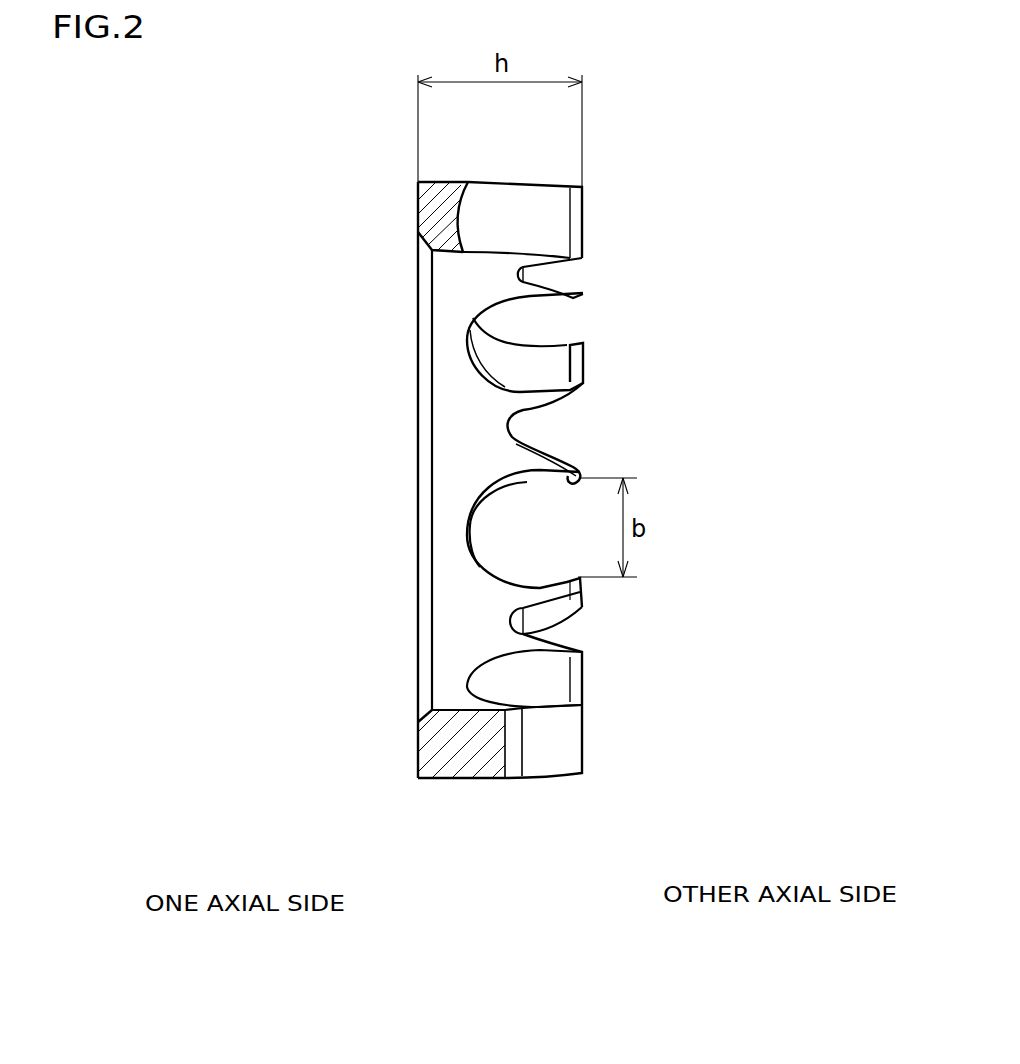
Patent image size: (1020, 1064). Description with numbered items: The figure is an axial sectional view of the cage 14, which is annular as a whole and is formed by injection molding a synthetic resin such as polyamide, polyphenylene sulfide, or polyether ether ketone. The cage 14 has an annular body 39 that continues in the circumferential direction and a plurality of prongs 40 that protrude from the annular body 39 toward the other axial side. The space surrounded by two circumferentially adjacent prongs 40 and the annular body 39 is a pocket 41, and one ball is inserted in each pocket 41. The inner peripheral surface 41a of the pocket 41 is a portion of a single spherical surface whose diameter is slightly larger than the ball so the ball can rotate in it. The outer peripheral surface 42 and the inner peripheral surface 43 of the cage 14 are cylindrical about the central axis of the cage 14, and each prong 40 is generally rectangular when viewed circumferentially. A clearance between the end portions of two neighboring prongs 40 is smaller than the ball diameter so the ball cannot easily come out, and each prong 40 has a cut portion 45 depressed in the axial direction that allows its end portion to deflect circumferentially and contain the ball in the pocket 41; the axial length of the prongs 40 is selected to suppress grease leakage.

The cage 14 is at (683, 110).
The annular body 39 is at (418, 210).
The prong 40 is at (497, 267).
The pocket 41 is at (510, 335).
The inner peripheral surface of the pocket 41a is at (523, 372).
The outer peripheral surface 42 is at (445, 780).
The inner peripheral surface 43 is at (458, 707).
The cut portion 45 is at (595, 275).